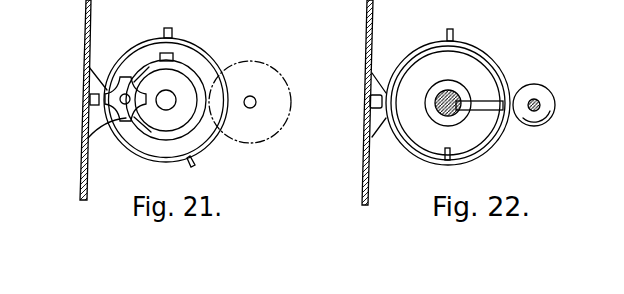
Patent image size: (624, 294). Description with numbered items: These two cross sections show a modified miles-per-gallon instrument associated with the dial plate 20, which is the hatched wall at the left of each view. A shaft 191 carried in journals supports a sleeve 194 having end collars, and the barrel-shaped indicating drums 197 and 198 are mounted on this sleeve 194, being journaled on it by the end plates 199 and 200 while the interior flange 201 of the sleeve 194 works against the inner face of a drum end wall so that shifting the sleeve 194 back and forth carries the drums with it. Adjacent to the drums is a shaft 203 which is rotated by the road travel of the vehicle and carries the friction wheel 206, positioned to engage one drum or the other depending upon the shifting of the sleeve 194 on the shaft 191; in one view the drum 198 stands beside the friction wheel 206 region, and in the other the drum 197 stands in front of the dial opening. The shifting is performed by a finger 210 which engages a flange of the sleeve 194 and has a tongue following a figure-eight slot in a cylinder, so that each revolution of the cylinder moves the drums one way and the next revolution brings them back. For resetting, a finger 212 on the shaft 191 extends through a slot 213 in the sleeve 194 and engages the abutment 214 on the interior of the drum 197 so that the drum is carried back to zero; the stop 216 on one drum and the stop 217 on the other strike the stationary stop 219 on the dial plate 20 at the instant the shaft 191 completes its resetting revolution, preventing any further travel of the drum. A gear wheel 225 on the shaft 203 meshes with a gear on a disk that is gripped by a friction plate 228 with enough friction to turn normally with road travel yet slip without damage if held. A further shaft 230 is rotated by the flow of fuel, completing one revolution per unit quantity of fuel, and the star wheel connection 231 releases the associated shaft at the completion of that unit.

In FIG. 21, the dial plate 20 is at (80, 157).
In FIG. 22, the dial plate 20 is at (362, 160).
In FIG. 22, the shaft 191 is at (457, 117).
In FIG. 22, the sleeve 194 is at (460, 88).
In FIG. 22, the indicating drum 197 is at (470, 40).
In FIG. 21, the indicating drum 198 is at (150, 165).
In FIG. 22, the end plate 199 is at (478, 80).
In FIG. 21, the end plate 200 is at (188, 57).
In FIG. 22, the interior flange 201 is at (438, 120).
In FIG. 21, the shaft 203 is at (255, 99).
In FIG. 22, the shaft 203 is at (540, 104).
In FIG. 22, the friction wheel 206 is at (541, 121).
In FIG. 21, the finger 210 is at (169, 53).
In FIG. 22, the finger 212 is at (484, 112).
In FIG. 22, the slot 213 is at (473, 98).
In FIG. 22, the abutment 214 is at (443, 157).
In FIG. 21, the stop 216 is at (166, 29).
In FIG. 22, the stop 216 is at (449, 29).
In FIG. 21, the stop 217 is at (194, 164).
In FIG. 21, the stationary stop 219 is at (90, 95).
In FIG. 22, the stationary stop 219 is at (371, 99).
In FIG. 21, the gear wheel 225 is at (270, 65).
In FIG. 21, the friction plate 228 is at (183, 72).
In FIG. 21, the shaft 230 is at (165, 102).
In FIG. 21, the star wheel connection 231 is at (88, 137).